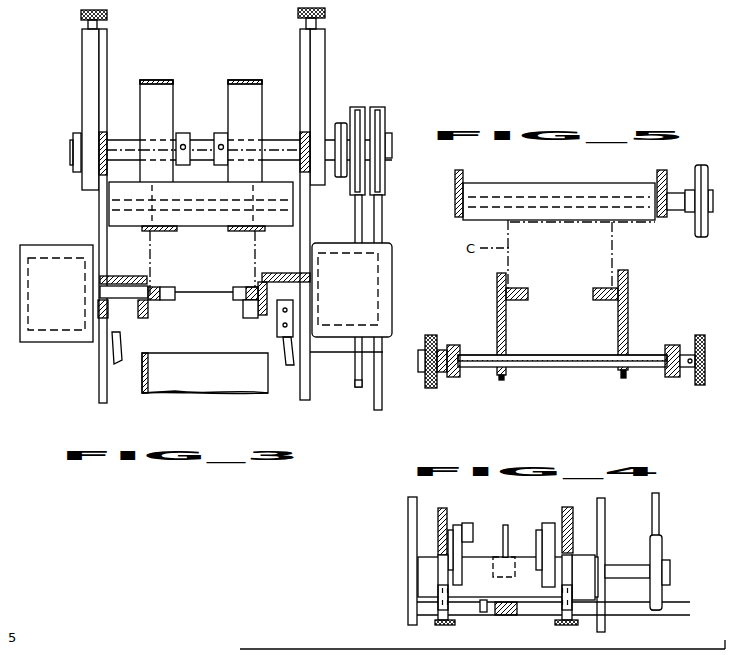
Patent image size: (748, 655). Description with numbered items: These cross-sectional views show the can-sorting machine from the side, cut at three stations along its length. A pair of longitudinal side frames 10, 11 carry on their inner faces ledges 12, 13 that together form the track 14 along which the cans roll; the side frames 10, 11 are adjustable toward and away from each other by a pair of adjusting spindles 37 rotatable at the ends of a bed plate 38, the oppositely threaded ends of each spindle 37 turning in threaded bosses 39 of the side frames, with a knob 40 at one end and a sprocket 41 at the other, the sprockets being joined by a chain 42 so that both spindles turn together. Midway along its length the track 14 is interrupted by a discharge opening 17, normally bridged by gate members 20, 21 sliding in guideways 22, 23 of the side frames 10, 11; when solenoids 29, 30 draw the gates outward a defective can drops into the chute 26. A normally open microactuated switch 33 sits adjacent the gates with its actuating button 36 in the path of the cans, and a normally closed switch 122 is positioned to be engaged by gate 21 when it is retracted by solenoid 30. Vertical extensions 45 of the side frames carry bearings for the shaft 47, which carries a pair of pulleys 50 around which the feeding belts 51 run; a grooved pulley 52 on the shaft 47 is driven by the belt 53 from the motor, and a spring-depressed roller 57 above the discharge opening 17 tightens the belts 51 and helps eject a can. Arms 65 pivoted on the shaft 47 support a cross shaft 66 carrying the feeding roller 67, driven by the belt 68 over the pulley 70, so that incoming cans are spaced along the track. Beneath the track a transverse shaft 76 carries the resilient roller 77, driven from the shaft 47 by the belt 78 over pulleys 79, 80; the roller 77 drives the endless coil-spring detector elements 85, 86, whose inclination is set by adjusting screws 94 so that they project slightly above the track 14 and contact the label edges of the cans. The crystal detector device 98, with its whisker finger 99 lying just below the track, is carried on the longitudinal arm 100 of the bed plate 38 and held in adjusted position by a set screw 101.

In FIG. 3, the side frame 10 is at (147, 276).
In FIG. 5, the side frame 10 is at (497, 304).
In FIG. 4, the side frame 10 is at (443, 508).
In FIG. 3, the side frame 11 is at (283, 272).
In FIG. 5, the side frame 11 is at (628, 300).
In FIG. 4, the side frame 11 is at (565, 507).
In FIG. 3, the ledge 12 is at (172, 297).
In FIG. 5, the ledge 12 is at (518, 300).
In FIG. 3, the ledge 13 is at (233, 292).
In FIG. 5, the ledge 13 is at (598, 300).
In FIG. 5, the track 14 is at (583, 290).
In FIG. 3, the discharge opening 17 is at (232, 300).
In FIG. 3, the gate member 20 is at (157, 290).
In FIG. 3, the gate member 21 is at (242, 290).
In FIG. 3, the guideway 22 is at (146, 318).
In FIG. 3, the guideway 23 is at (250, 315).
In FIG. 3, the chute 26 is at (205, 383).
In FIG. 3, the solenoid 29 is at (48, 245).
In FIG. 3, the solenoid 30 is at (380, 278).
In FIG. 3, the microactuated switch 33 is at (278, 320).
In FIG. 3, the actuating button 36 is at (248, 275).
In FIG. 5, the adjusting spindle 37 is at (555, 367).
In FIG. 5, the bed plate 38 is at (456, 378).
In FIG. 5, the boss 39 is at (503, 381).
In FIG. 5, the knob 40 is at (697, 385).
In FIG. 5, the sprocket 41 is at (428, 360).
In FIG. 5, the chain 42 is at (440, 380).
In FIG. 3, the vertical extension 45 is at (82, 48).
In FIG. 4, the vertical extension 45 is at (408, 518).
In FIG. 3, the shaft 47 is at (200, 143).
In FIG. 3, the pulley 50 is at (164, 112).
In FIG. 3, the feeding belt 51 is at (150, 80).
In FIG. 3, the grooved pulley 52 is at (385, 112).
In FIG. 3, the belt 53 is at (382, 222).
In FIG. 3, the roller 57 is at (205, 220).
In FIG. 5, the arm 65 is at (455, 176).
In FIG. 5, the cross shaft 66 is at (585, 197).
In FIG. 5, the feeding roller 67 is at (538, 183).
In FIG. 3, the belt 68 is at (340, 125).
In FIG. 5, the belt 68 is at (703, 240).
In FIG. 5, the pulley 70 is at (694, 214).
In FIG. 4, the transverse shaft 76 is at (632, 578).
In FIG. 4, the resilient roller 77 is at (420, 575).
In FIG. 3, the belt 78 is at (365, 203).
In FIG. 4, the belt 78 is at (659, 507).
In FIG. 3, the pulley 79 is at (357, 107).
In FIG. 3, the pulley 80 is at (355, 385).
In FIG. 4, the pulley 80 is at (650, 600).
In FIG. 4, the detector element 85 is at (461, 525).
In FIG. 4, the detector element 86 is at (548, 523).
In FIG. 4, the adjusting screw 94 is at (445, 625).
In FIG. 4, the detector device 98 is at (493, 565).
In FIG. 4, the finger 99 is at (505, 525).
In FIG. 4, the arm 100 is at (505, 615).
In FIG. 4, the set screw 101 is at (483, 612).
In FIG. 3, the switch 122 is at (205, 373).